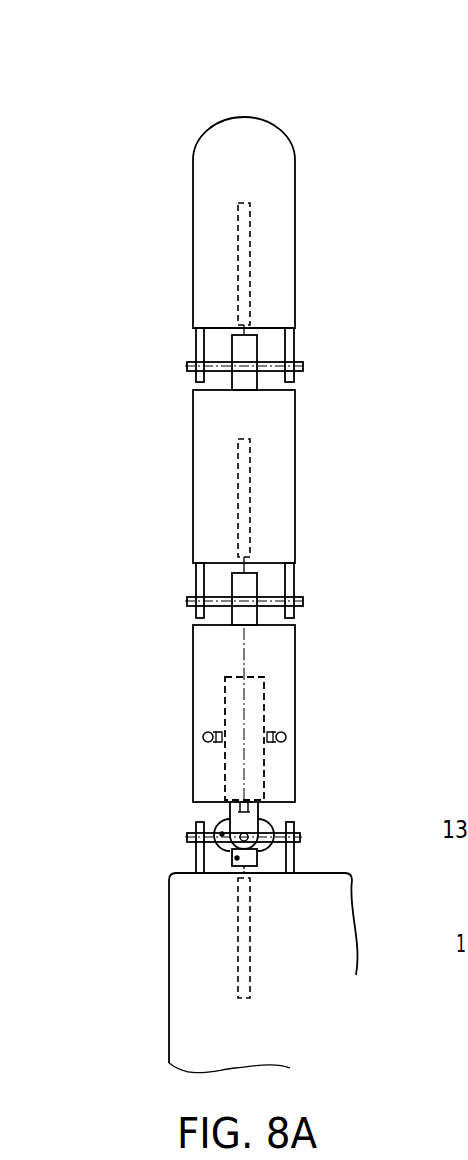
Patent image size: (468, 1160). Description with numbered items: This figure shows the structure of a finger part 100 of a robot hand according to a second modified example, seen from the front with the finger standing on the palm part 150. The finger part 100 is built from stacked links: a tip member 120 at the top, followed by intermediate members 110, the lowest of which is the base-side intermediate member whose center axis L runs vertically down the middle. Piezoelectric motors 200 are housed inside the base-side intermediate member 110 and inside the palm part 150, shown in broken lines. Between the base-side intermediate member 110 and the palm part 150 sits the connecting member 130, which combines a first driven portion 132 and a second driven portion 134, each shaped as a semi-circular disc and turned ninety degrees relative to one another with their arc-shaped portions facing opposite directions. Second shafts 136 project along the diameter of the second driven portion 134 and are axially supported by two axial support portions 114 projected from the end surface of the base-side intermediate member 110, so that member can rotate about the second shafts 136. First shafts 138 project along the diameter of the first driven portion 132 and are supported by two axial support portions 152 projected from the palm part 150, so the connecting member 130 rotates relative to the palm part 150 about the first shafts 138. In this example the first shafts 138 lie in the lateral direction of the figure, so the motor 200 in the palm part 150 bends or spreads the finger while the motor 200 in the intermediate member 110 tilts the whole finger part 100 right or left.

The finger part 100 is at (285, 92).
The end cap link 120 is at (295, 202).
The intermediate member 110 is at (295, 667).
The center axis L is at (243, 657).
The piezoelectric motor 200 is at (265, 712).
The axial support portion 114 is at (276, 801).
The connecting member 130 is at (196, 834).
The first driven portion 132 is at (230, 812).
The first shaft 138 is at (222, 834).
The second shaft 136 is at (237, 858).
The second driven portion 134 is at (232, 858).
The palm part 150 is at (169, 952).
The axial support portion 152 is at (179, 877).